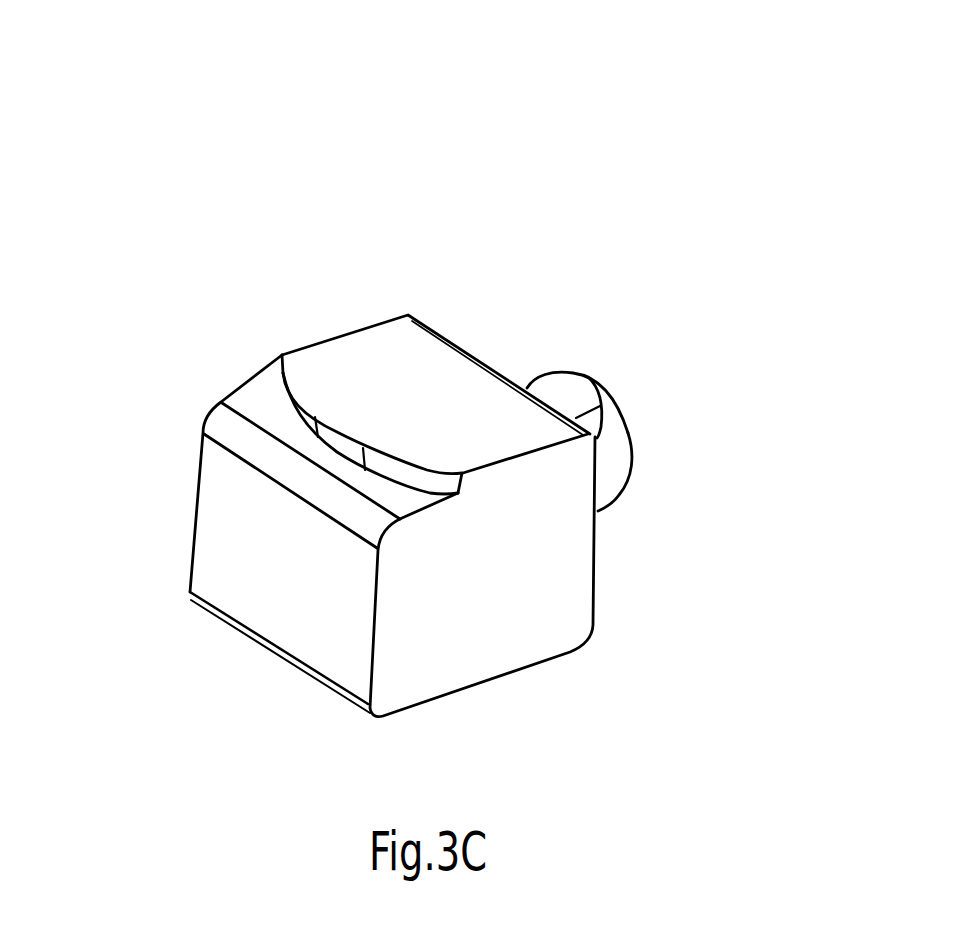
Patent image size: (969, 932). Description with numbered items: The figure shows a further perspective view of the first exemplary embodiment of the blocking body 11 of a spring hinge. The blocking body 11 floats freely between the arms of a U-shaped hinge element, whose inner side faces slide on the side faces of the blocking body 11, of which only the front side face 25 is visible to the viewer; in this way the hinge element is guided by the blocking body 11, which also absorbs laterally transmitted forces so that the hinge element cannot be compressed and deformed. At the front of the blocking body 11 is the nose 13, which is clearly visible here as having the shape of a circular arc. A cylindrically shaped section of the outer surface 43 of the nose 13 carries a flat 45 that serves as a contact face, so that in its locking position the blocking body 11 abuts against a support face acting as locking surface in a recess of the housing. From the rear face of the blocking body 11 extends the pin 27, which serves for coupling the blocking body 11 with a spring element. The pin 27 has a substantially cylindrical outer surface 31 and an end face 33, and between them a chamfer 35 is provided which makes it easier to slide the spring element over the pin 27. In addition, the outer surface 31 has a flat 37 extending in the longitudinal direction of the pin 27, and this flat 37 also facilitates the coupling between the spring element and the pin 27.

The blocking body 11 is at (471, 178).
The nose 13 is at (342, 447).
The front side face 25 is at (493, 625).
The pin 27 is at (604, 486).
The outer surface 31 is at (603, 465).
The end face 33 is at (617, 400).
The chamfer 35 is at (619, 433).
The flat 37 is at (559, 393).
The outer surface 43 is at (398, 472).
The flat 45 is at (343, 447).